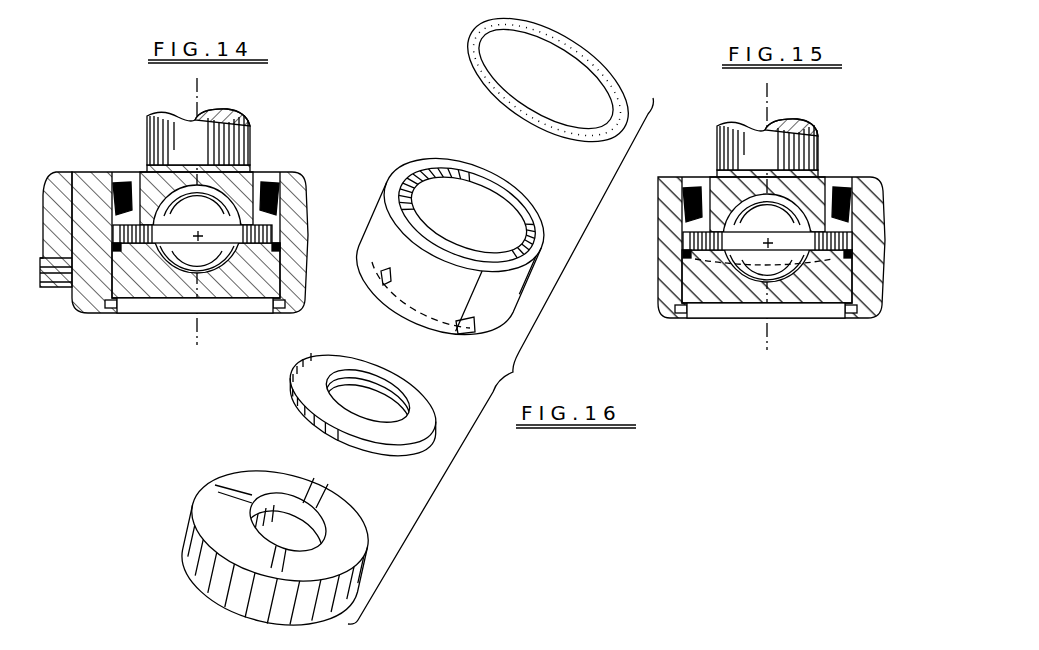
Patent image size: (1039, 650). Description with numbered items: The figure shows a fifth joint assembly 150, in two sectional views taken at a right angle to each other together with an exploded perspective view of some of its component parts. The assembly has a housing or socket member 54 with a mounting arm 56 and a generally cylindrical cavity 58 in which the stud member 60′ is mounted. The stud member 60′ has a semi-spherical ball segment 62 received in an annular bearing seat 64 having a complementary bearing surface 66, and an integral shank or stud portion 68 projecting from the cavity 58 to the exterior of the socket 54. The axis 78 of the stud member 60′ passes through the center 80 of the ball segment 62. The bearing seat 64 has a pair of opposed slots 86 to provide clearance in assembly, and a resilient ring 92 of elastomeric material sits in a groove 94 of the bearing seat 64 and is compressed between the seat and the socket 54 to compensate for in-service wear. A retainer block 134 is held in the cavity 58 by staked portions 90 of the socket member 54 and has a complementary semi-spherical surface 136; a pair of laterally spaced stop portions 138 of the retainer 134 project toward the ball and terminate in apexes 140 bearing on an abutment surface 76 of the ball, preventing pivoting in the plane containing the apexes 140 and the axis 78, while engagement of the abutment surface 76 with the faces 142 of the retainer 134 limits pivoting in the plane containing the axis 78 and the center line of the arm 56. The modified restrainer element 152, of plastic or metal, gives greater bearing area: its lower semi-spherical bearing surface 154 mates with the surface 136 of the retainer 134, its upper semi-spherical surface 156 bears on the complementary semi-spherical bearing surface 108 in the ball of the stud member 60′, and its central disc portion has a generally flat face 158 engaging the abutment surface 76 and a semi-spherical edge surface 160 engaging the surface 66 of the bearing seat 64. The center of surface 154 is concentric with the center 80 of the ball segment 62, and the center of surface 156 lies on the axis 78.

In FIG. 14, the housing or socket member 54 is at (308, 313).
In FIG. 15, the housing or socket member 54 is at (904, 326).
In FIG. 14, the mounting arm 56 is at (62, 185).
In FIG. 14, the cylindrical cavity 58 is at (303, 300).
In FIG. 15, the cylindrical cavity 58 is at (788, 244).
In FIG. 14, the stud member 60′ is at (147, 112).
In FIG. 15, the stud member 60′ is at (791, 110).
In FIG. 14, the semi-spherical ball segment 62 is at (254, 178).
In FIG. 15, the semi-spherical ball segment 62 is at (880, 168).
In FIG. 14, the annular bearing seat 64 is at (284, 201).
In FIG. 16, the annular bearing seat 64 is at (386, 186).
In FIG. 15, the annular bearing seat 64 is at (767, 222).
In FIG. 14, the bearing surface 66 is at (278, 279).
In FIG. 16, the bearing surface 66 is at (490, 208).
In FIG. 14, the shank or stud portion 68 is at (238, 143).
In FIG. 15, the shank or stud portion 68 is at (746, 140).
In FIG. 14, the abutment surface 76 is at (283, 235).
In FIG. 15, the abutment surface 76 is at (793, 313).
In FIG. 14, the axis of the stud member 78 is at (195, 102).
In FIG. 15, the axis of the stud member 78 is at (751, 98).
In FIG. 14, the center of the ball segment 80 is at (195, 232).
In FIG. 15, the center of the ball segment 80 is at (785, 213).
In FIG. 16, the slots 86 is at (390, 286).
In FIG. 14, the staked portions 90 is at (111, 314).
In FIG. 15, the staked portions 90 is at (780, 245).
In FIG. 14, the resilient ring 92 is at (123, 174).
In FIG. 16, the resilient ring 92 is at (471, 67).
In FIG. 16, the groove 94 is at (400, 164).
In FIG. 14, the semi-spherical bearing surface 108 is at (203, 197).
In FIG. 15, the semi-spherical bearing surface 108 is at (728, 184).
In FIG. 14, the retainer block 134 is at (255, 305).
In FIG. 16, the retainer block 134 is at (198, 503).
In FIG. 15, the retainer block 134 is at (778, 355).
In FIG. 14, the semi-spherical surface 136 is at (213, 250).
In FIG. 16, the semi-spherical surface 136 is at (288, 508).
In FIG. 15, the semi-spherical surface 136 is at (767, 328).
In FIG. 16, the stop portions 138 is at (262, 558).
In FIG. 16, the apexes 140 is at (288, 558).
In FIG. 15, the apexes 140 is at (717, 323).
In FIG. 14, the faces 142 is at (112, 262).
In FIG. 16, the faces 142 is at (246, 484).
In FIG. 14, the fifth joint assembly 150 is at (93, 98).
In FIG. 15, the fifth joint assembly 150 is at (850, 103).
In FIG. 14, the restrainer element 152 is at (270, 240).
In FIG. 16, the restrainer element 152 is at (296, 420).
In FIG. 15, the restrainer element 152 is at (726, 240).
In FIG. 14, the semi-spherical bearing surface 154 is at (185, 262).
In FIG. 16, the semi-spherical bearing surface 154 is at (344, 450).
In FIG. 15, the semi-spherical bearing surface 154 is at (741, 322).
In FIG. 14, the semi-spherical surface 156 is at (118, 190).
In FIG. 16, the semi-spherical surface 156 is at (385, 396).
In FIG. 14, the flat face 158 is at (100, 182).
In FIG. 16, the flat face 158 is at (418, 412).
In FIG. 15, the flat face 158 is at (717, 204).
In FIG. 14, the semi-spherical edge surface 160 is at (173, 238).
In FIG. 16, the semi-spherical edge surface 160 is at (398, 455).
In FIG. 15, the semi-spherical edge surface 160 is at (663, 323).